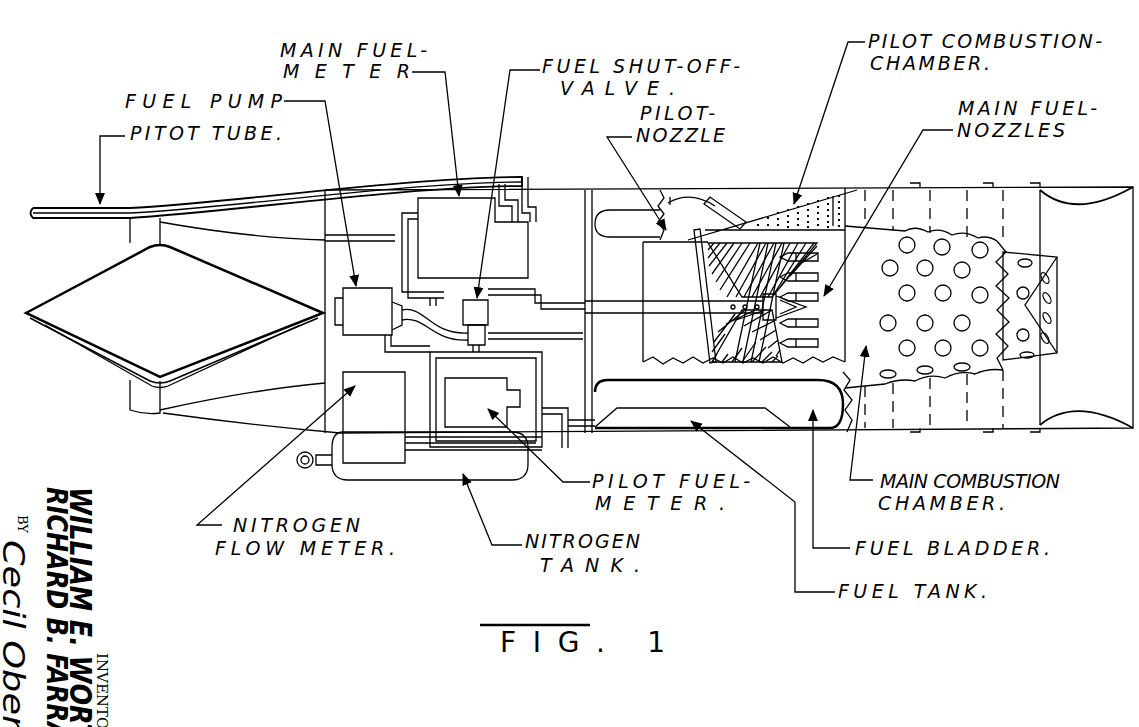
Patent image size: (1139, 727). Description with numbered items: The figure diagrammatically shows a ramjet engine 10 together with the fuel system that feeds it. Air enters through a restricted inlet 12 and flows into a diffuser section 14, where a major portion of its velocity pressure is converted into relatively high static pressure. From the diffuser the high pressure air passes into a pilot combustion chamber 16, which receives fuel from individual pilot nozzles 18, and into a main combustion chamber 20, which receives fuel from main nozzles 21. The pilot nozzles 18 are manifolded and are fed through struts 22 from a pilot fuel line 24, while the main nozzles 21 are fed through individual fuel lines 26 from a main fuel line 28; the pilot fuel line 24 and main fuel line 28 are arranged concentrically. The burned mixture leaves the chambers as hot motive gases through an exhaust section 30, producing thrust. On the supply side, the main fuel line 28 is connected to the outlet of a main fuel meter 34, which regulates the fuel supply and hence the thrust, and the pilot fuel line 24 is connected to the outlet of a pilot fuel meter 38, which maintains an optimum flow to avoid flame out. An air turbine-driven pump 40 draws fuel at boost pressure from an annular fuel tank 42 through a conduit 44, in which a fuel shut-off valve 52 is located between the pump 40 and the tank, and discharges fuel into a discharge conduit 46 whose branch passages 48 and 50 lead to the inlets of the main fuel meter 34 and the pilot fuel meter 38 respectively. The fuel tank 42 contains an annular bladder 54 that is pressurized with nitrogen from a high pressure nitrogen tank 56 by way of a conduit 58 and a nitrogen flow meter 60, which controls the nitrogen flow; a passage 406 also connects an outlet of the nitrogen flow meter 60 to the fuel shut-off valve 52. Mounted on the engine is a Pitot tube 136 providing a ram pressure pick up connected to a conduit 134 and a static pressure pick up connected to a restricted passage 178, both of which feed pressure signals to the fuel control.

The ramjet engine 10 is at (748, 185).
The restricted inlet 12 is at (133, 392).
The diffuser section 14 is at (301, 369).
The pilot combustion chamber 16 is at (847, 189).
The pilot nozzles 18 is at (685, 238).
The main combustion chamber 20 is at (903, 378).
The main nozzles 21 is at (824, 320).
The struts 22 is at (697, 258).
The pilot fuel line 24 is at (653, 303).
The individual fuel lines 26 is at (712, 346).
The main fuel line 28 is at (684, 309).
The exhaust section 30 is at (1107, 242).
The main fuel meter 34 is at (461, 232).
The pilot fuel meter 38 is at (474, 407).
The air turbine-driven pump 40 is at (373, 324).
The annular fuel tank 42 is at (737, 426).
The conduit 44 is at (560, 339).
The discharge conduit 46 is at (387, 354).
The branch passage 48 is at (437, 296).
The branch passage 50 is at (438, 357).
The fuel shut-off valve 52 is at (482, 306).
The annular bladder 54 is at (657, 409).
The high pressure nitrogen tank 56 is at (410, 479).
The conduit 58 is at (567, 447).
The nitrogen flow meter 60 is at (377, 438).
The conduit 134 is at (235, 196).
The Pitot tube 136 is at (76, 222).
The restricted passage 178 is at (528, 206).
The passage 406 is at (540, 398).